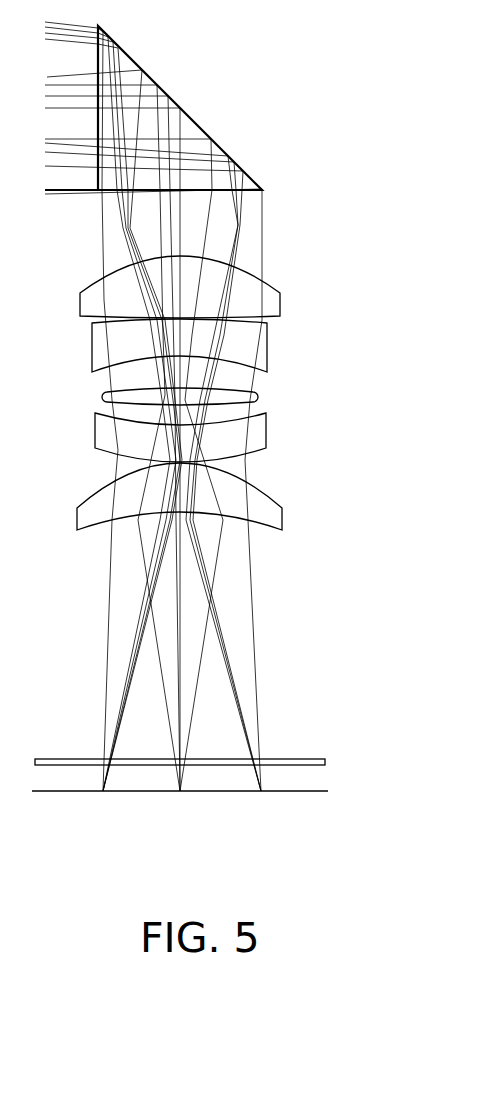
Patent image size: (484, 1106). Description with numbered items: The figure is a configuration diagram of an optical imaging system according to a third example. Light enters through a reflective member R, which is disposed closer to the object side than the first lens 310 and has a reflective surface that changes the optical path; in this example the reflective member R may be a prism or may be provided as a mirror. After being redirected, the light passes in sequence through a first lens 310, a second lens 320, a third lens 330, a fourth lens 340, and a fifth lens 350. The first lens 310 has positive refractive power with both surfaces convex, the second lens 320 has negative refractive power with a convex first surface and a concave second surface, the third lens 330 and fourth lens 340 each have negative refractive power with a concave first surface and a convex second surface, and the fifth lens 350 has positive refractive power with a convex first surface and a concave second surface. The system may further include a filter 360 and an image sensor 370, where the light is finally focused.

The reflective member R is at (201, 129).
The first lens 310 is at (267, 298).
The second lens 320 is at (258, 345).
The third lens 330 is at (252, 394).
The fourth lens 340 is at (255, 433).
The fifth lens 350 is at (263, 518).
The filter 360 is at (305, 759).
The image sensor 370 is at (305, 791).